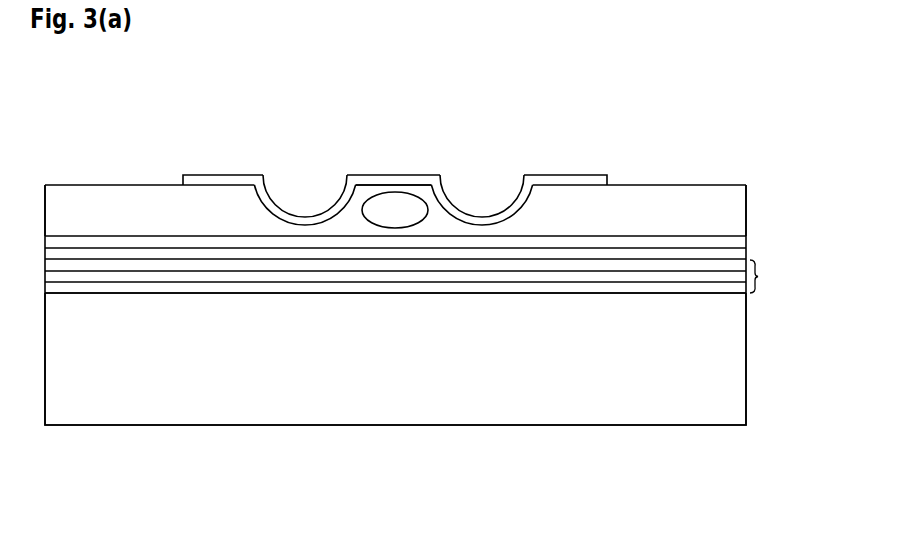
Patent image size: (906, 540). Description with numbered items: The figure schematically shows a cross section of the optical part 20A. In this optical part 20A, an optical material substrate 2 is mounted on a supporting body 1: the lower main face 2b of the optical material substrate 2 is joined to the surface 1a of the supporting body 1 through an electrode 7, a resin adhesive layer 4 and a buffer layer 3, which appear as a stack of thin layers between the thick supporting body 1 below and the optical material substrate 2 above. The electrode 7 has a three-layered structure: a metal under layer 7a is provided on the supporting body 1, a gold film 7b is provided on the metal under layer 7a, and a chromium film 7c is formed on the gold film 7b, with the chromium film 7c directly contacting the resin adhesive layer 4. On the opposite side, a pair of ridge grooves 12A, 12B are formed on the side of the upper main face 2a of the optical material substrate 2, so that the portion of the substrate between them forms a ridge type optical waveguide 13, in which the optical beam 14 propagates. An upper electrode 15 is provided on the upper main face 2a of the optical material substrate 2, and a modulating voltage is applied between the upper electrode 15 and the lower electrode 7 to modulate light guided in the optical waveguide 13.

The optical part 20A is at (748, 153).
The supporting body 1 is at (738, 373).
The surface of supporting body 1a is at (658, 292).
The optical material substrate 2 is at (740, 207).
The main face of optical material substrate 2a is at (637, 185).
The main face of optical material substrate 2b is at (613, 238).
The buffer layer 3 is at (738, 245).
The resin adhesive layer 4 is at (740, 257).
The electrode 7 is at (762, 276).
The metal under layer 7a is at (512, 288).
The gold film 7b is at (460, 277).
The chromium film 7c is at (400, 265).
The ridge groove 12A is at (305, 225).
The ridge groove 12B is at (482, 225).
The optical waveguide 13 is at (420, 192).
The optical beam 14 is at (397, 208).
The upper electrode 15 is at (218, 174).